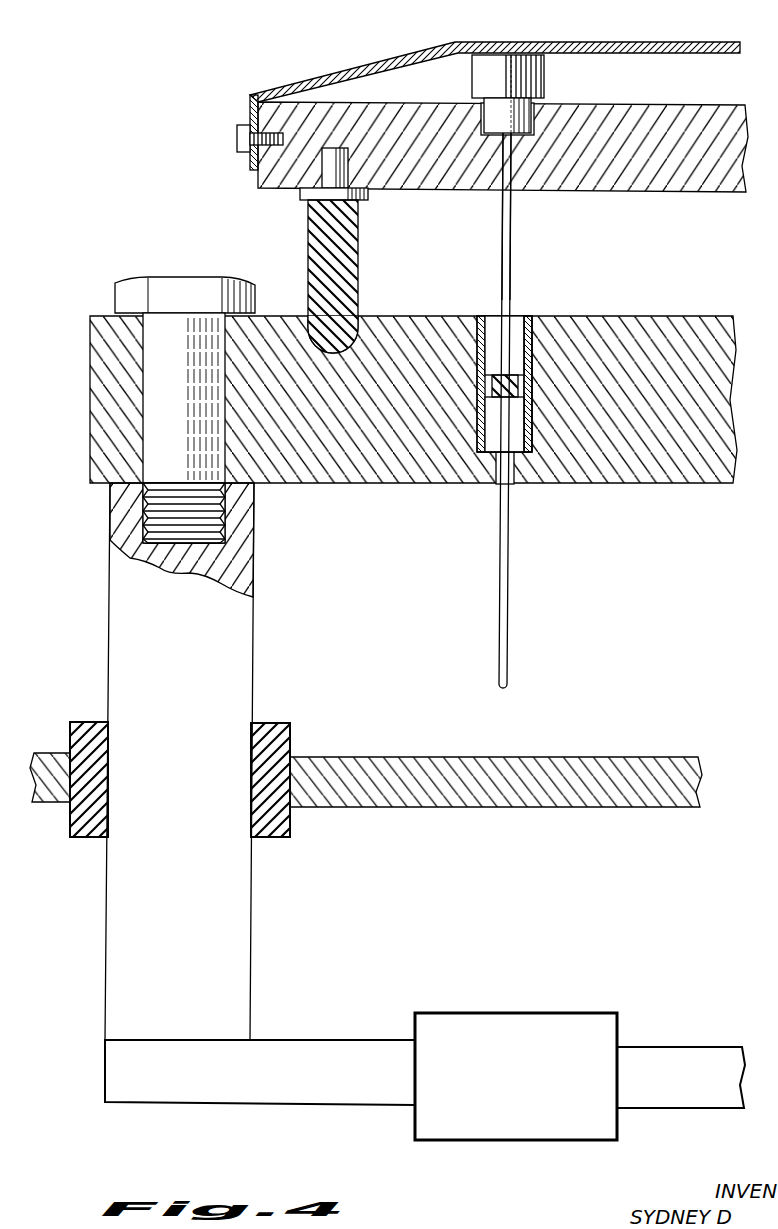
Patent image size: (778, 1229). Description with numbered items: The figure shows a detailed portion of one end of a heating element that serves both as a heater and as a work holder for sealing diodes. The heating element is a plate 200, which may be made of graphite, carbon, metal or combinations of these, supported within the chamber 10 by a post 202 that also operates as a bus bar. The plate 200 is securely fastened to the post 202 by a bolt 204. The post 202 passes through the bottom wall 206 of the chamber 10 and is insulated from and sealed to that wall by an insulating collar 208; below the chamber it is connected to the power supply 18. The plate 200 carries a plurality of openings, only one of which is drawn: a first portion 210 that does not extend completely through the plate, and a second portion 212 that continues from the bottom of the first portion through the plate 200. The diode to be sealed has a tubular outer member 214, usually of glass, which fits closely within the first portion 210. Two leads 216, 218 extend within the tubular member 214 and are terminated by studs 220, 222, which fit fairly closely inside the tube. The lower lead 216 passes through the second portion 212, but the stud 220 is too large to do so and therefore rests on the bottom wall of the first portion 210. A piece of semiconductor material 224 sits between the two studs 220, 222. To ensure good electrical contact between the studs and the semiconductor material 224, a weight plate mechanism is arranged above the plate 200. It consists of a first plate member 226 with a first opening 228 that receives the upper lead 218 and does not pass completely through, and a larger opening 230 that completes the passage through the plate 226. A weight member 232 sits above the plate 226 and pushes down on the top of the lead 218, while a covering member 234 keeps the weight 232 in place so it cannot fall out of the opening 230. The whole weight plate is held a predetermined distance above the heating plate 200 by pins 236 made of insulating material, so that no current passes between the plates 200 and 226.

The chamber 10 is at (716, 591).
The power supply 18 is at (593, 1013).
The plate 200 is at (640, 485).
The post 202 is at (243, 639).
The bolt 204 is at (168, 277).
The bottom wall 206 is at (412, 757).
The insulating collar 208 is at (291, 727).
The first portion of opening 210 is at (532, 416).
The second portion of opening 212 is at (512, 473).
The tubular outer member 214 is at (530, 350).
The lead 216 is at (508, 621).
The lead 218 is at (515, 166).
The stud 220 is at (493, 417).
The stud 222 is at (493, 343).
The semiconductor material 224 is at (518, 383).
The first plate member 226 is at (667, 191).
The first opening 228 is at (506, 216).
The larger opening 230 is at (533, 131).
The weight member 232 is at (540, 86).
The covering member 234 is at (612, 42).
The pins 236 is at (360, 254).